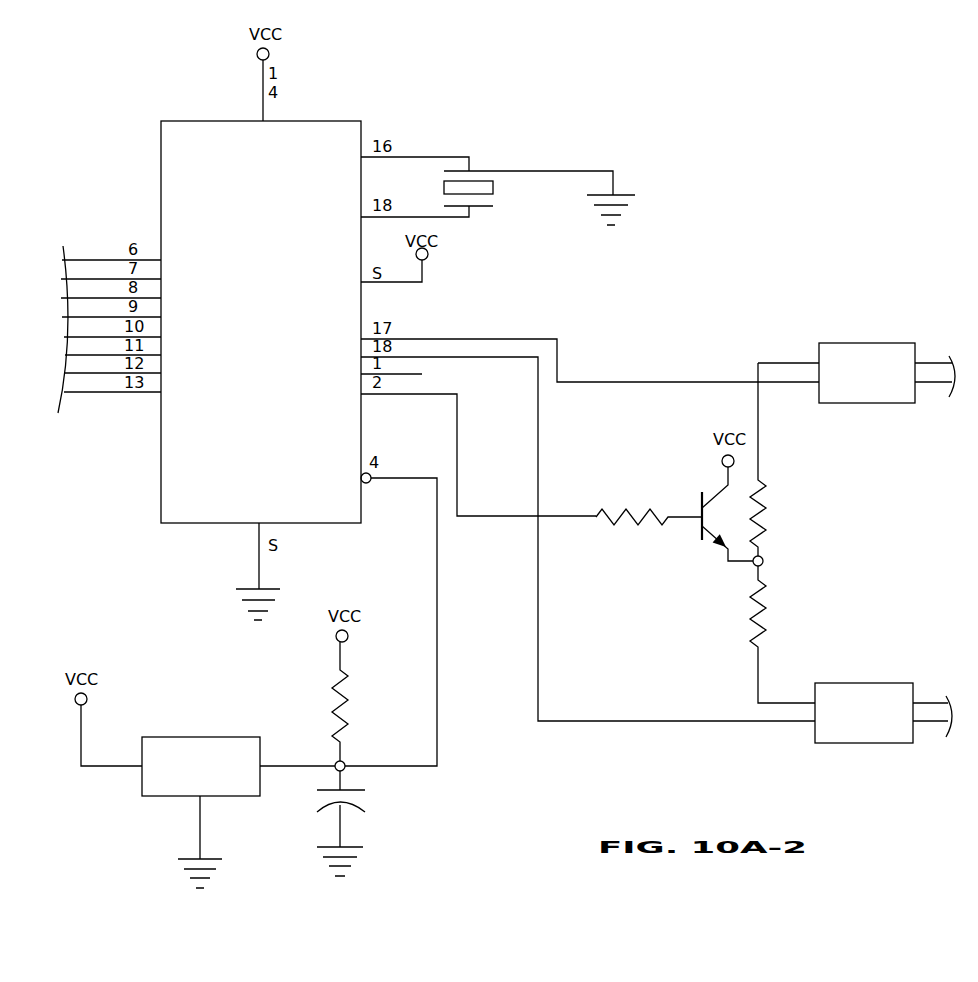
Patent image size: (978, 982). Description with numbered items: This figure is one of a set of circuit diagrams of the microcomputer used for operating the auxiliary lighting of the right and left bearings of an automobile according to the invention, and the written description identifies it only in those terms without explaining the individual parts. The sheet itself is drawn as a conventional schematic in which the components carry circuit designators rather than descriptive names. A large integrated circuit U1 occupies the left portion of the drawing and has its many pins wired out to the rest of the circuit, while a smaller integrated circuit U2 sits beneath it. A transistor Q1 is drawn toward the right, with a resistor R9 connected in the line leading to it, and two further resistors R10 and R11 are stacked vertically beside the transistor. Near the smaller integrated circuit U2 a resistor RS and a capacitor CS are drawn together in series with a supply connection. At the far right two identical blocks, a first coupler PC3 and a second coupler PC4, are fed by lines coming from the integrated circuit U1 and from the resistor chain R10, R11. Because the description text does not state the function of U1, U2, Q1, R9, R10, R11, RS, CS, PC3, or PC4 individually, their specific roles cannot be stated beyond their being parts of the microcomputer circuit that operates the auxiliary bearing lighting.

The microcontroller PIC54 U1 is at (292, 308).
The reset IC TS10 U2 is at (201, 793).
The transistor Q1815 Q1 is at (726, 526).
The resistor 4.7K R9 is at (649, 492).
The resistor 330R R10 is at (785, 459).
The resistor 330R R11 is at (784, 634).
The resistor 1K RS is at (355, 701).
The capacitor 2.2 CS is at (357, 823).
The photocoupler PCS17 PC3 is at (856, 373).
The photocoupler PCS17 PC4 is at (876, 713).